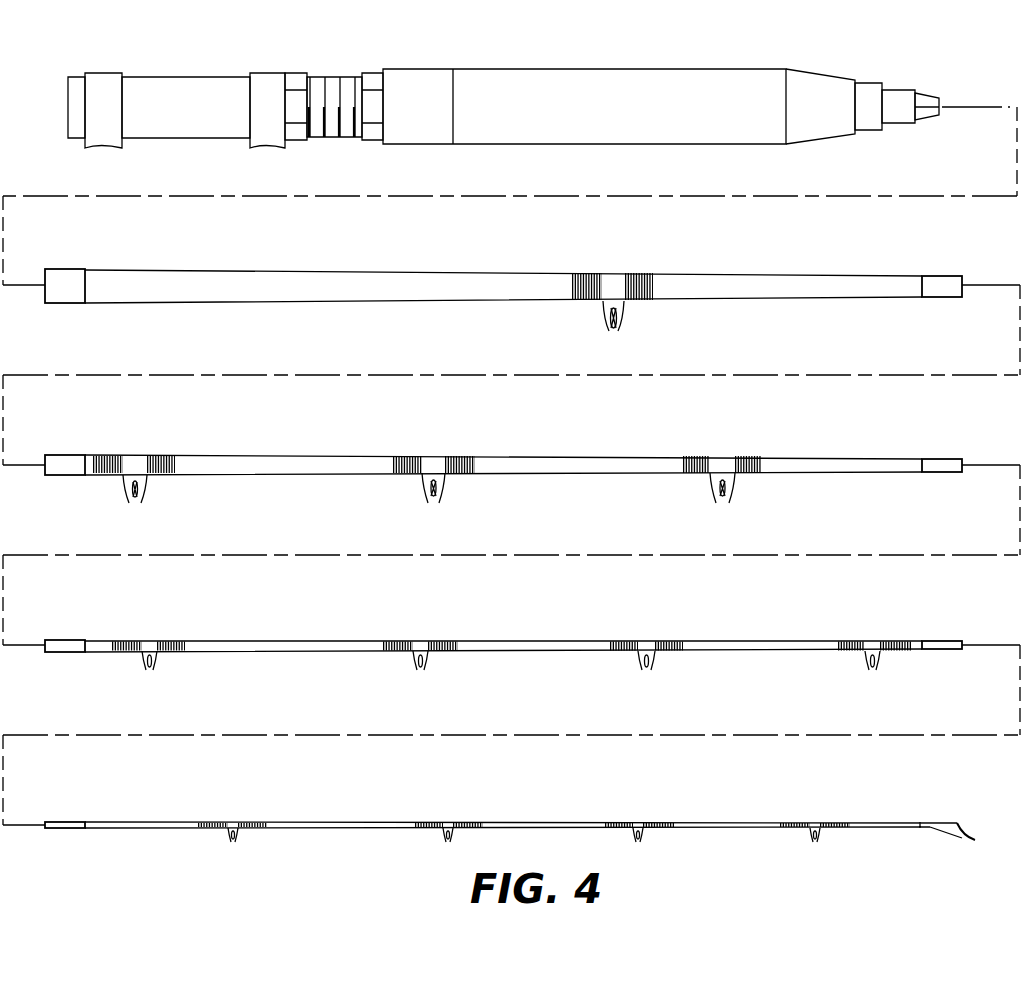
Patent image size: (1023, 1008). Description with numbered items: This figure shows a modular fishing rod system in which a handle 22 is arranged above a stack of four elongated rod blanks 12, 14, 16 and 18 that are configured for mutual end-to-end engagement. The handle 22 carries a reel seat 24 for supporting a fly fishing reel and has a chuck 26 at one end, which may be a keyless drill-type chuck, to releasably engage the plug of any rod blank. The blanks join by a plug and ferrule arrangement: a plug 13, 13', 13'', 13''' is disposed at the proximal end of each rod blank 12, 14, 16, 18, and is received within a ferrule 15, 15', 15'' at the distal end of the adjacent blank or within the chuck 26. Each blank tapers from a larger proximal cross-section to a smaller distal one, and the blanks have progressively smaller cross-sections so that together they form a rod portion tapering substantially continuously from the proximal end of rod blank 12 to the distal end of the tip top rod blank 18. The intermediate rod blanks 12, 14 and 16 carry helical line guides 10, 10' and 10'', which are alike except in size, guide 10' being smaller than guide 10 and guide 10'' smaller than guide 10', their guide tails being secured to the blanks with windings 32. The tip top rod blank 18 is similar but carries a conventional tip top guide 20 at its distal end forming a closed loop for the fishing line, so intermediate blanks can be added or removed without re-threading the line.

The handle 22 is at (539, 111).
The reel seat 24 is at (183, 150).
The chuck 26 is at (899, 97).
The rod blank 12 is at (503, 393).
The plug 13 is at (72, 271).
The ferrule 15 is at (939, 310).
The windings 32 is at (650, 275).
The helical line guide 10 is at (368, 427).
The rod blank 14 is at (503, 464).
The plug 13' is at (70, 450).
The ferrule 15' is at (942, 486).
The rod blank 16 is at (503, 661).
The plug 13'' is at (71, 629).
The ferrule 15'' is at (942, 665).
The helical line guide 10' is at (144, 686).
The tip top rod blank 18 is at (534, 832).
The plug 13''' is at (69, 808).
The helical line guide 10'' is at (232, 859).
The tip top guide 20 is at (975, 840).